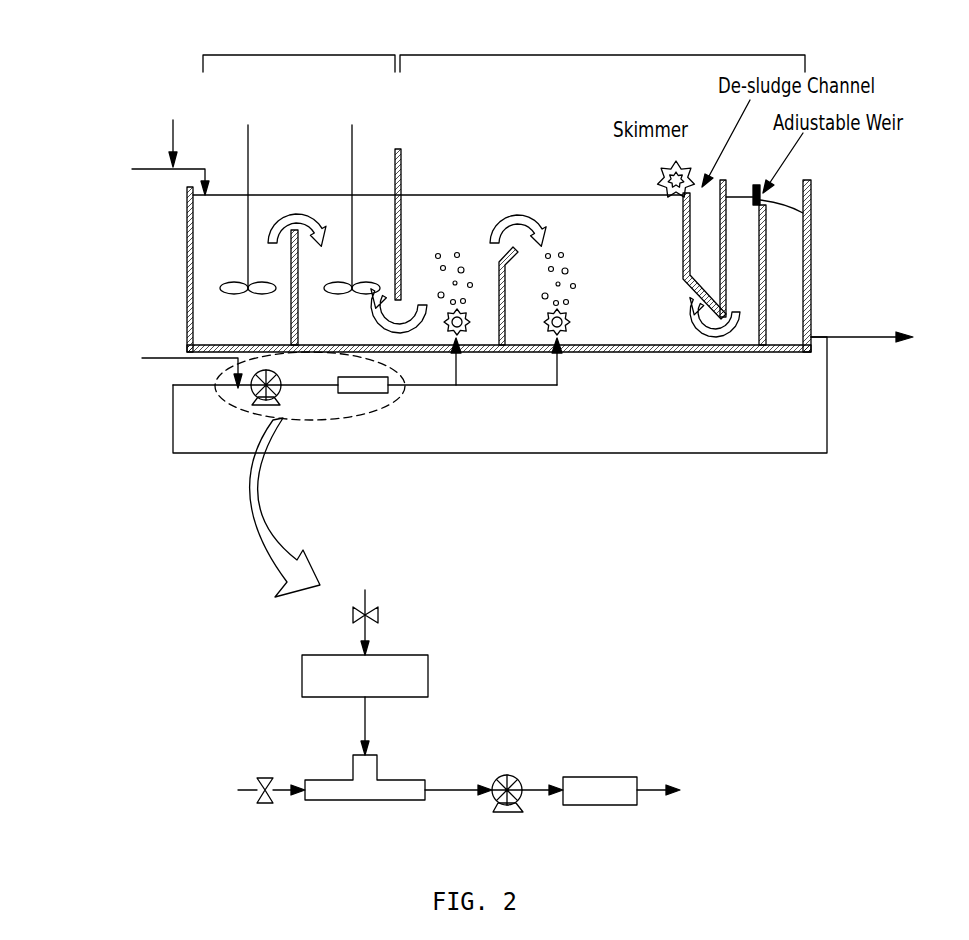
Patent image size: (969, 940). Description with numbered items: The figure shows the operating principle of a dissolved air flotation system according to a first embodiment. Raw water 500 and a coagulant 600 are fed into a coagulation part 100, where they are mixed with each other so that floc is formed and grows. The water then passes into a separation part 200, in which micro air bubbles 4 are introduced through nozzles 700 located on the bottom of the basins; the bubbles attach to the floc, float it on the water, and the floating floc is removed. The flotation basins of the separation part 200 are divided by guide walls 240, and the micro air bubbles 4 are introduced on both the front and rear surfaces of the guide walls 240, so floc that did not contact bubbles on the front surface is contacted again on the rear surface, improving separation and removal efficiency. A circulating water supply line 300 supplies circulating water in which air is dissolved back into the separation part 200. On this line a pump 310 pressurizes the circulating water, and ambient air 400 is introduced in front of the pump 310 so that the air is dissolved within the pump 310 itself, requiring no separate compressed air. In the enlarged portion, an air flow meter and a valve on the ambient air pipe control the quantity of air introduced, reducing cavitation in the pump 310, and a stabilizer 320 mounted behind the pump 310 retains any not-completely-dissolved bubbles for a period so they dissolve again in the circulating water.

The coagulation part 100 is at (299, 55).
The separation part 200 is at (603, 55).
The coagulant 600 is at (166, 113).
The raw water 500 is at (123, 177).
The micro air bubbles 4 is at (457, 253).
The guide walls 240 is at (503, 290).
The nozzles 700 is at (470, 322).
The ambient air 400 is at (230, 548).
The pump 310 is at (268, 405).
The stabilizer 320 is at (363, 395).
The circulating water supply line 300 is at (585, 453).